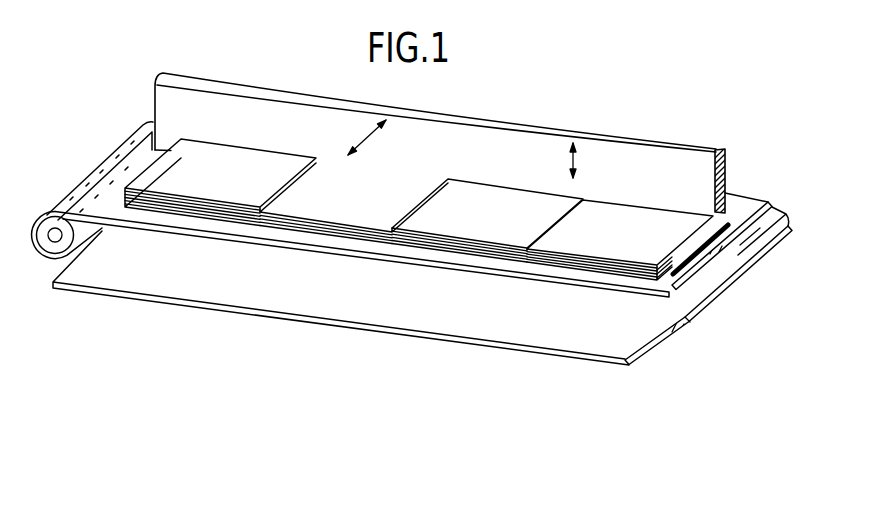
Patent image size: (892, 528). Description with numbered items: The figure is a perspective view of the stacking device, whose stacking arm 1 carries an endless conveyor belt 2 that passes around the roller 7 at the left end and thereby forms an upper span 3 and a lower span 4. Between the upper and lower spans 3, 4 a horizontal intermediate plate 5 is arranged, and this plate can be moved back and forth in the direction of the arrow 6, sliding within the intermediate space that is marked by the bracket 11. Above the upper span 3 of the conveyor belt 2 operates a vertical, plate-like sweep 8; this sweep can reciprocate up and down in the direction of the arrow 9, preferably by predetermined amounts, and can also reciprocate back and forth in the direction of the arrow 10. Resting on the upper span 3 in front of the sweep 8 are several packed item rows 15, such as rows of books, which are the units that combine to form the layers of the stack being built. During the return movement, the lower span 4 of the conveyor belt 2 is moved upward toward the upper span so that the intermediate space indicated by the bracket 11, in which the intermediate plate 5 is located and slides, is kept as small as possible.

The stacking arm 1 is at (733, 117).
The endless conveyor belt 2 is at (143, 124).
The upper span 3 is at (745, 208).
The lower span 4 is at (767, 247).
The horizontal intermediate plate 5 is at (620, 336).
The arrow 6 is at (426, 272).
The roller 7 is at (55, 243).
The vertical plate-like sweep 8 is at (669, 168).
The arrow 9 is at (582, 158).
The arrow 10 is at (368, 138).
The bracket 11 is at (750, 270).
The packed item rows 15 is at (384, 213).